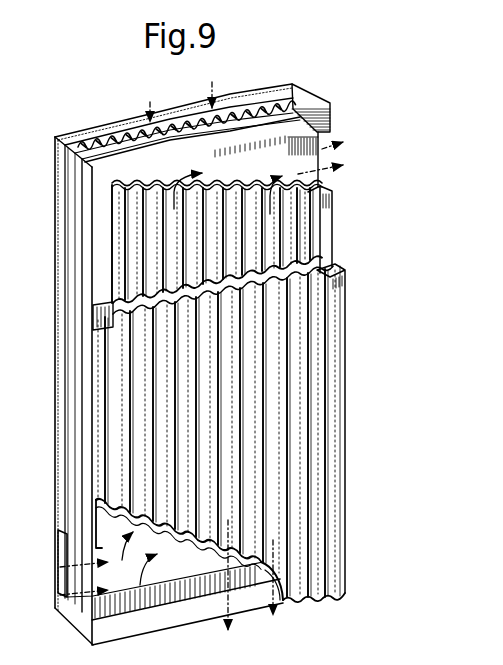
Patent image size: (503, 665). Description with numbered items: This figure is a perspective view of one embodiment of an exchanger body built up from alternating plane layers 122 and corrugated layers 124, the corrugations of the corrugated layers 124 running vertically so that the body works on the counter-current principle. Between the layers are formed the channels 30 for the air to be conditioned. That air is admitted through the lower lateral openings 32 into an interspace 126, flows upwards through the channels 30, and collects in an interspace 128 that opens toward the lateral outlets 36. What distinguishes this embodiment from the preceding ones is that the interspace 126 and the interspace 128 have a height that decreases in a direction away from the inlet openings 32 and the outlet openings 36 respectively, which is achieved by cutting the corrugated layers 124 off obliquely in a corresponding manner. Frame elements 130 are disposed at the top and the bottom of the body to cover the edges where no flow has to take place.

The channels 30 is at (142, 312).
The lower lateral openings 32 is at (67, 550).
The lateral outlets 36 is at (322, 186).
The plane layers 122 is at (278, 274).
The corrugated layers 124 is at (288, 226).
The interspace 126 is at (2, 55).
The interspace 128 is at (289, 150).
The frame elements 130 is at (97, 633).